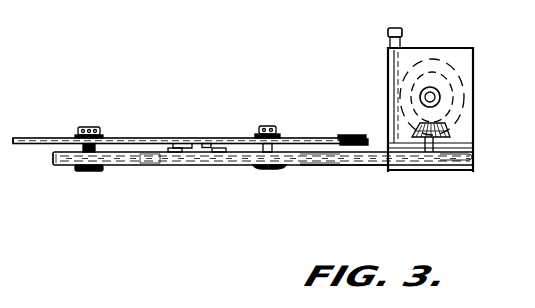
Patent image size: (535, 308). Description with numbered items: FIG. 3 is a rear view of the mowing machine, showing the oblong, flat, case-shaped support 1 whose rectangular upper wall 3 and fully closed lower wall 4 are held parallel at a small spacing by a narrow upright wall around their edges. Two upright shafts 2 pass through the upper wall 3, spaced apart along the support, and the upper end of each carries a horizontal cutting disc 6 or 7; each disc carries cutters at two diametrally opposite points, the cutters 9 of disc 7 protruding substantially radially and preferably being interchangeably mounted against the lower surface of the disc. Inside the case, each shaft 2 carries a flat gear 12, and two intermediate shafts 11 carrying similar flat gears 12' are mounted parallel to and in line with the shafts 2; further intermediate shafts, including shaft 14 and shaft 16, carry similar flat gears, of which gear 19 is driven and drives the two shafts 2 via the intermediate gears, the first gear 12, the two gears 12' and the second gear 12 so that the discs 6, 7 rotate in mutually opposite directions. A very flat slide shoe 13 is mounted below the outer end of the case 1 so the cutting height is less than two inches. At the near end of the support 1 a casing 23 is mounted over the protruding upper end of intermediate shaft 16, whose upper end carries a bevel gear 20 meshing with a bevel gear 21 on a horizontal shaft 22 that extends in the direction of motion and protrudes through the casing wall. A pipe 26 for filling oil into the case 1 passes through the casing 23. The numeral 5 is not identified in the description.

The case-shaped support 1 is at (247, 172).
The upright shaft 2 is at (88, 172).
The upper wall 3 is at (370, 141).
The lower wall 4 is at (373, 166).
The beam end 5 is at (55, 166).
The cutting disc 6 is at (33, 138).
The cutting disc 7 is at (307, 138).
The cutter 9 is at (352, 136).
The intermediate shaft 11 is at (180, 161).
The flat gear 12 is at (270, 169).
The flat gear 12' is at (146, 131).
The slide shoe 13 is at (463, 172).
The intermediate shaft 14 is at (328, 166).
The intermediate shaft 16 is at (425, 170).
The flat gear 19 is at (476, 156).
The bevel gear 20 is at (450, 130).
The bevel gear 21 is at (458, 72).
The horizontal shaft 22 is at (435, 99).
The casing 23 is at (427, 47).
The pipe 26 is at (388, 31).